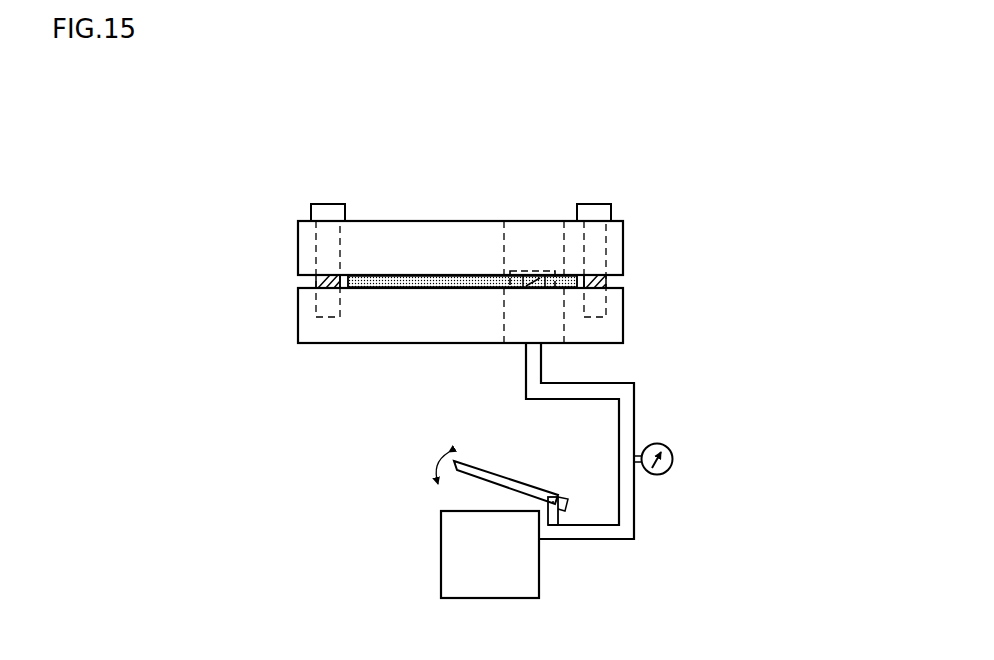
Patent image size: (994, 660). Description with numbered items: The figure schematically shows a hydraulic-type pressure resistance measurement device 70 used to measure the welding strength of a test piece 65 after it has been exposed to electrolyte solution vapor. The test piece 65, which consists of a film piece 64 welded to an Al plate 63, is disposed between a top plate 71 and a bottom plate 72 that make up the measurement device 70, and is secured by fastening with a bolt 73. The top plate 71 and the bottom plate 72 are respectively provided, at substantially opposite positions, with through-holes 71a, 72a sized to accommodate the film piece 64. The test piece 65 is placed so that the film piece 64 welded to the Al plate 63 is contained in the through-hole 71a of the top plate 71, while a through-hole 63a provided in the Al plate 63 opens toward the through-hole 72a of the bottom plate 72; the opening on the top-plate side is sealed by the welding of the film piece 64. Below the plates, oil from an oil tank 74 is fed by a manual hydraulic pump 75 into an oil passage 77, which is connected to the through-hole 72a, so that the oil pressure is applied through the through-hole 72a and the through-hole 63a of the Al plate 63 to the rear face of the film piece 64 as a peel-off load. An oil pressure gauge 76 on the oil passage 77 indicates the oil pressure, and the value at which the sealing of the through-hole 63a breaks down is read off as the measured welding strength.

The hydraulic-type pressure resistance measurement device 70 is at (712, 178).
The top plate 71 is at (298, 255).
The bottom plate 72 is at (298, 323).
The through-hole 71a is at (522, 240).
The through-hole 72a is at (504, 320).
The bolt 73 is at (335, 209).
The test piece 65 is at (422, 268).
The Al plate 63 is at (430, 288).
The through-hole 63a is at (533, 288).
The film piece 64 is at (544, 271).
The oil tank 74 is at (530, 583).
The manual hydraulic pump 75 is at (498, 476).
The oil pressure gauge 76 is at (672, 466).
The oil passage 77 is at (636, 400).